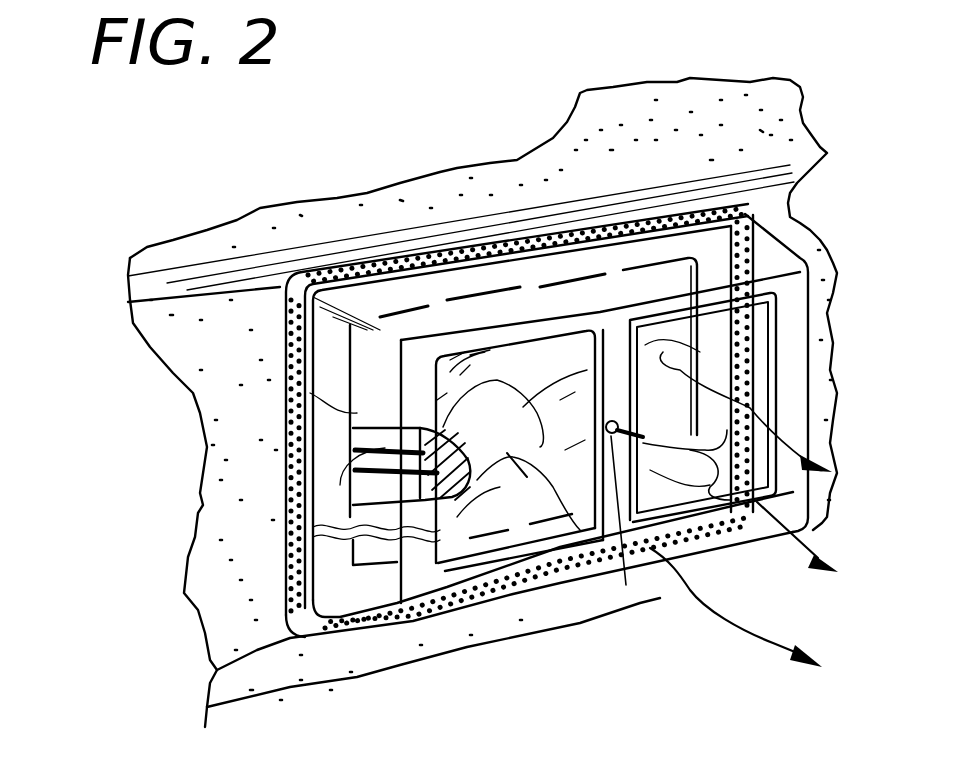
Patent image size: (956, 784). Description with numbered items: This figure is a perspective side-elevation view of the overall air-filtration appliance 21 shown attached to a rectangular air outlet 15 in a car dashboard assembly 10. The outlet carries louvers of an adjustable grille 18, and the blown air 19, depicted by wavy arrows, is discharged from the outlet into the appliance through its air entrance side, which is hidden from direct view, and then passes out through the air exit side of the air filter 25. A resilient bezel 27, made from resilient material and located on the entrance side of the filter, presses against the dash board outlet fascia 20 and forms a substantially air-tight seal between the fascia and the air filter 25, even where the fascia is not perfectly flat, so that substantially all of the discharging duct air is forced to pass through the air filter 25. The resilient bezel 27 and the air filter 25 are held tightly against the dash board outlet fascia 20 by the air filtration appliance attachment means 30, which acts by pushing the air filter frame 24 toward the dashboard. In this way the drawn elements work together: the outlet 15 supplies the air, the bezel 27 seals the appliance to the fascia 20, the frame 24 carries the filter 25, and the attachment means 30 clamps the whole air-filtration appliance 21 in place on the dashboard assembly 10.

The car dashboard assembly 10 is at (598, 124).
The rectangular air outlet 15 is at (287, 528).
The louvers of adjustable grille 18 is at (352, 497).
The blown air 19 is at (803, 562).
The dash board outlet fascia 20 is at (347, 660).
The overall air-filtration appliance 21 is at (273, 405).
The air filter frame 24 is at (607, 377).
The air filter 25 is at (510, 490).
The resilient bezel 27 is at (282, 292).
The air filtration appliance attachment means 30 is at (621, 437).